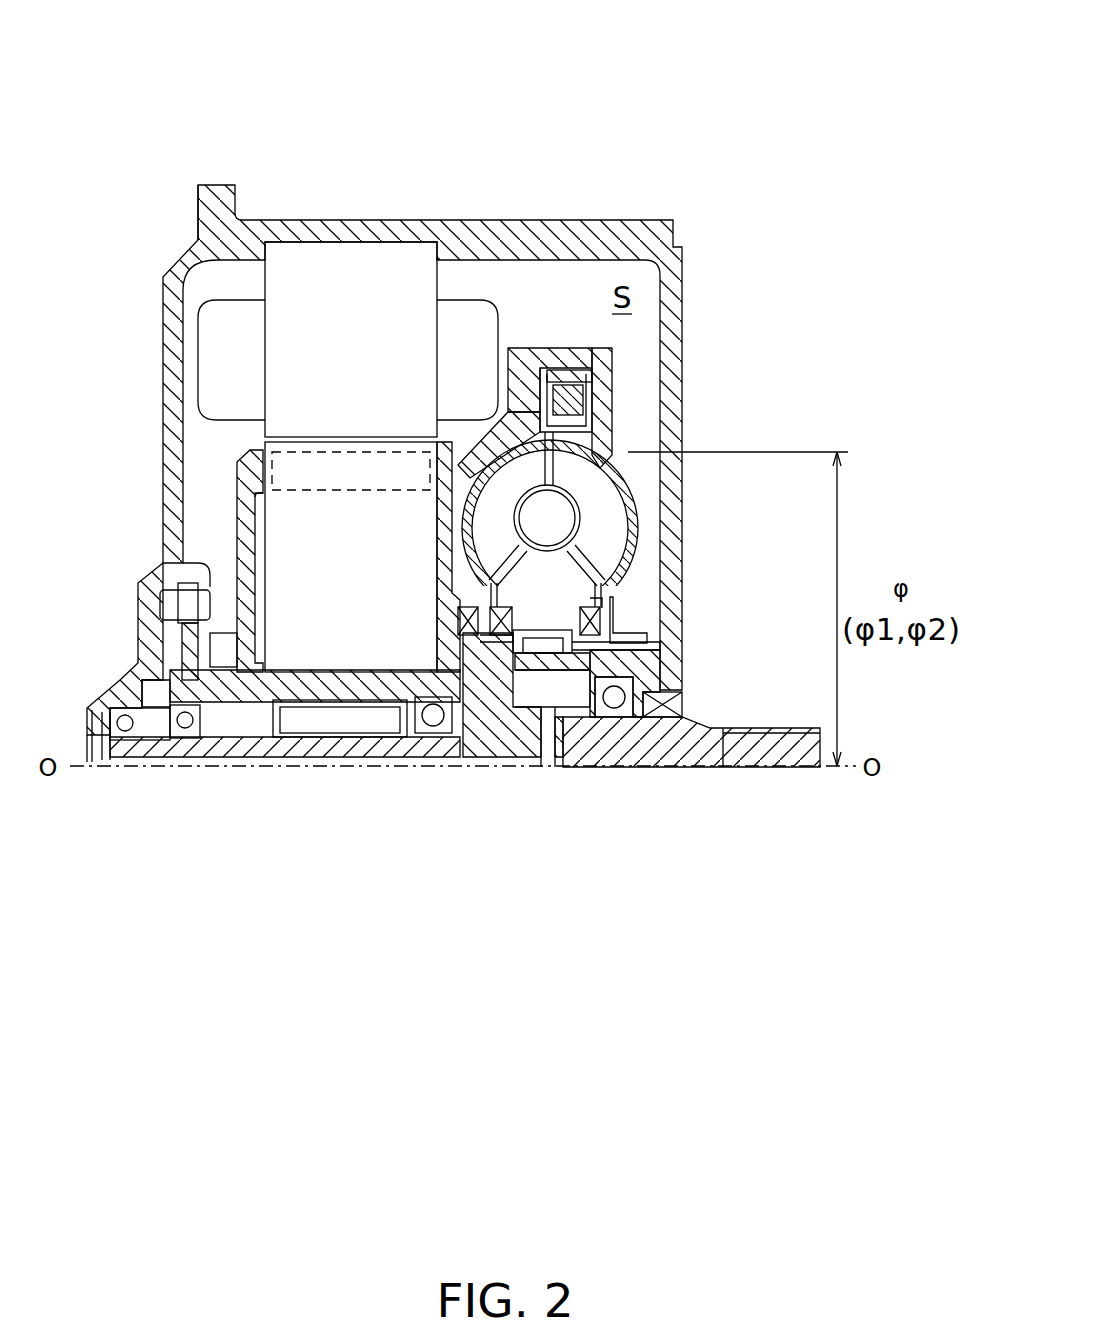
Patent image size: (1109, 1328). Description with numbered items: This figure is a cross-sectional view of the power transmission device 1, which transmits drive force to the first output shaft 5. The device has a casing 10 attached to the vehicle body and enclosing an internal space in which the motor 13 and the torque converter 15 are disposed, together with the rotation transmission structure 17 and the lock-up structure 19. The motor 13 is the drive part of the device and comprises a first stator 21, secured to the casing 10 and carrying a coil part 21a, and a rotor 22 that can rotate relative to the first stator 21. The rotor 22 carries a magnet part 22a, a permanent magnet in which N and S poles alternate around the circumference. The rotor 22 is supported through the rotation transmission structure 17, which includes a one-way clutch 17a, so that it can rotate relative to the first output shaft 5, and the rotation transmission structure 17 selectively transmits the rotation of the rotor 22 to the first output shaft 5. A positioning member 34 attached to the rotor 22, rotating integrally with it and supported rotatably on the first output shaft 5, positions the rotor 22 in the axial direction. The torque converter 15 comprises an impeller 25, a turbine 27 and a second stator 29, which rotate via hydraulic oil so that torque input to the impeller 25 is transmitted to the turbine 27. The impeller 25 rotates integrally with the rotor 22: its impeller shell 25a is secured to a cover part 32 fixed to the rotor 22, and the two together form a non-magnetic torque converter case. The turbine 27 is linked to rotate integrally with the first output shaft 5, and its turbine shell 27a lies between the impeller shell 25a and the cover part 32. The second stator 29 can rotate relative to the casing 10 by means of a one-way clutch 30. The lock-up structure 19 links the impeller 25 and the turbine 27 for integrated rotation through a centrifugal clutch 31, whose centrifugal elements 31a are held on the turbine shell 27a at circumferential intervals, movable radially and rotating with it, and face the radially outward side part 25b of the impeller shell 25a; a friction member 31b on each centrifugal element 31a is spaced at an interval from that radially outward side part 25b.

The power transmission device 1 is at (702, 116).
The first output shaft 5 is at (770, 752).
The casing 10 is at (677, 218).
The motor 13 is at (96, 337).
The torque converter 15 is at (769, 494).
The rotation transmission structure 17 is at (340, 745).
The one-way clutch 17a is at (302, 725).
The lock-up structure 19 is at (578, 372).
The first stator 21 is at (197, 360).
The coil part 21a is at (458, 320).
The rotor 22 is at (250, 520).
The magnet part 22a is at (316, 490).
The impeller 25 is at (643, 557).
The impeller shell 25a is at (607, 435).
The radially outward side part 25b is at (538, 349).
The turbine 27 is at (532, 502).
The turbine shell 27a is at (478, 642).
The second stator 29 is at (603, 597).
The one-way clutch 30 is at (550, 647).
The centrifugal clutch 31 is at (578, 372).
The centrifugal element 31a is at (580, 397).
The friction member 31b is at (590, 350).
The cover part 32 is at (440, 563).
The positioning member 34 is at (345, 690).